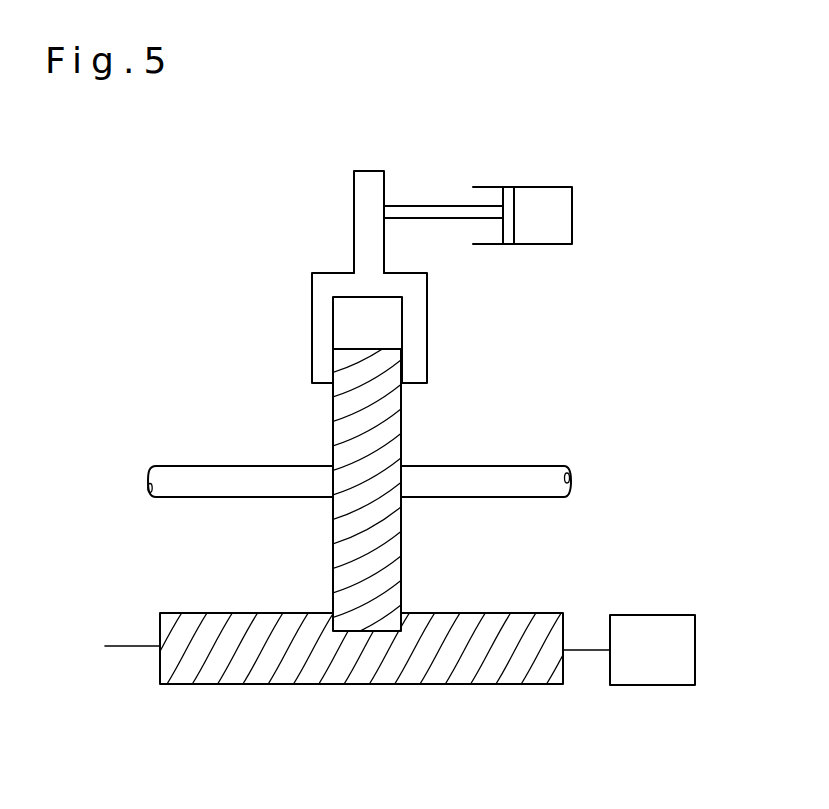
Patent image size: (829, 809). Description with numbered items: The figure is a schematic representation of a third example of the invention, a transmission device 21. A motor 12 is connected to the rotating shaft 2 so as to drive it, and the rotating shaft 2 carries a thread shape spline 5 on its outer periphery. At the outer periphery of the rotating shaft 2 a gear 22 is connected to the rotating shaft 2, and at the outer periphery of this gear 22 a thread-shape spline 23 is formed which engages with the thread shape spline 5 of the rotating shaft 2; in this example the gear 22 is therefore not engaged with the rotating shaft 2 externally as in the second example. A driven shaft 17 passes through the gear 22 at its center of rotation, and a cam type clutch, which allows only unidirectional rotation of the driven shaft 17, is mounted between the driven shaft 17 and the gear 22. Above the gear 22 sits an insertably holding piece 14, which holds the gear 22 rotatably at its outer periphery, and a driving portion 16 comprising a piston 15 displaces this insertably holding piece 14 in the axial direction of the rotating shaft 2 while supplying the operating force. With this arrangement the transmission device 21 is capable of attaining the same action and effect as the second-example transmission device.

The rotating shaft 2 is at (541, 612).
The thread shape spline 5 is at (535, 647).
The motor 12 is at (670, 615).
The insertably holding piece 14 is at (418, 302).
The piston 15 is at (543, 200).
The driving portion 16 is at (342, 214).
The driven shaft 17 is at (548, 480).
The transmission device 21 is at (390, 167).
The gear 22 is at (407, 431).
The thread-shape spline 23 is at (368, 598).